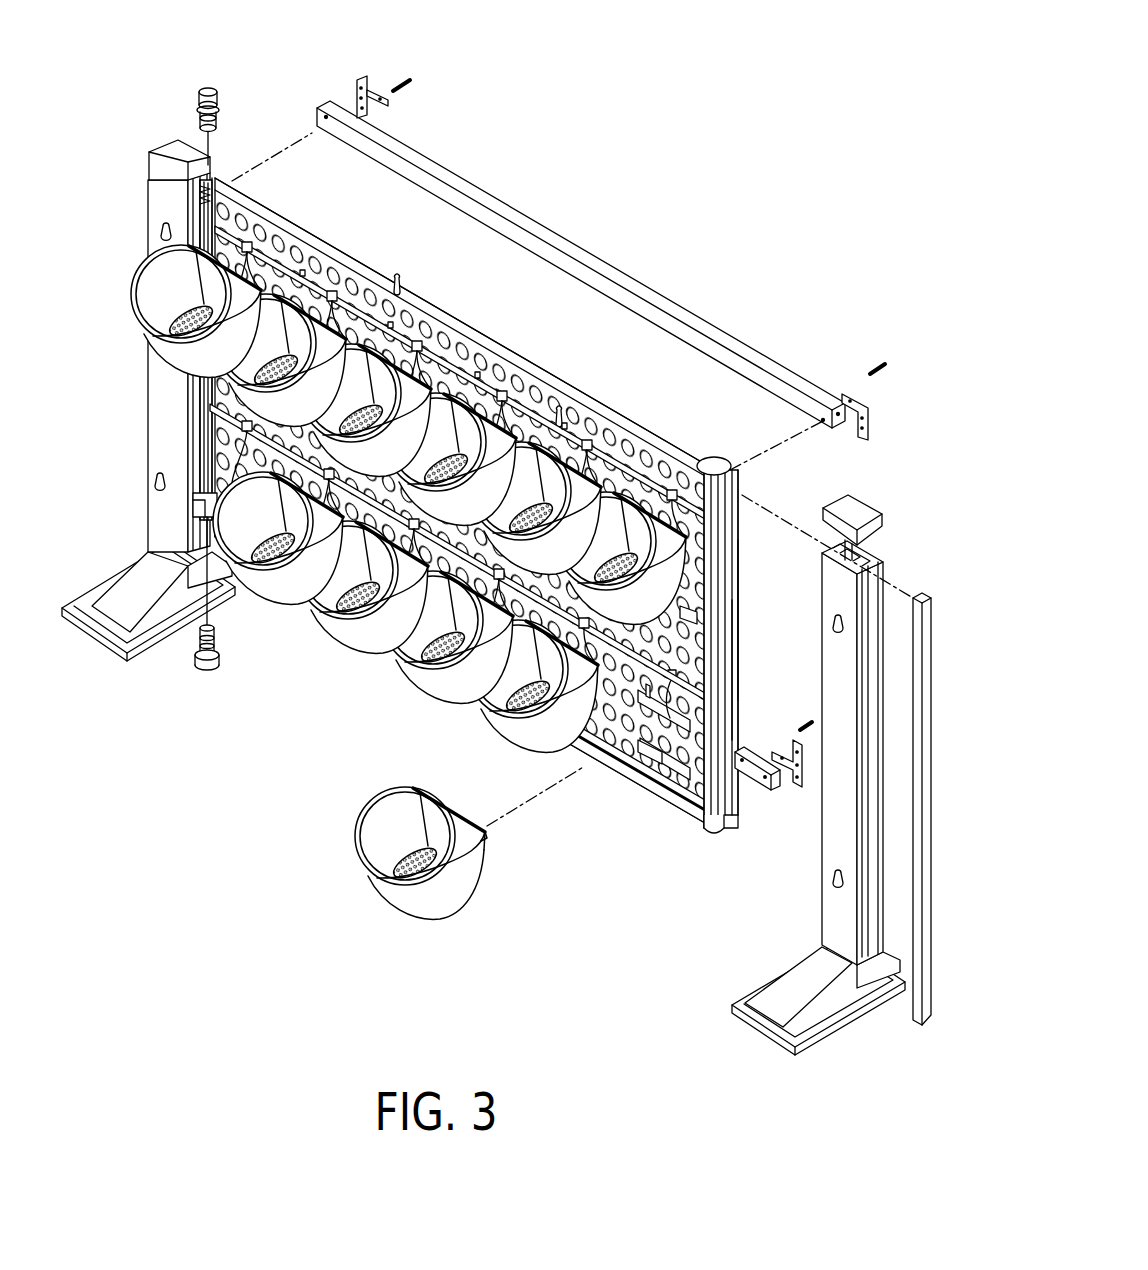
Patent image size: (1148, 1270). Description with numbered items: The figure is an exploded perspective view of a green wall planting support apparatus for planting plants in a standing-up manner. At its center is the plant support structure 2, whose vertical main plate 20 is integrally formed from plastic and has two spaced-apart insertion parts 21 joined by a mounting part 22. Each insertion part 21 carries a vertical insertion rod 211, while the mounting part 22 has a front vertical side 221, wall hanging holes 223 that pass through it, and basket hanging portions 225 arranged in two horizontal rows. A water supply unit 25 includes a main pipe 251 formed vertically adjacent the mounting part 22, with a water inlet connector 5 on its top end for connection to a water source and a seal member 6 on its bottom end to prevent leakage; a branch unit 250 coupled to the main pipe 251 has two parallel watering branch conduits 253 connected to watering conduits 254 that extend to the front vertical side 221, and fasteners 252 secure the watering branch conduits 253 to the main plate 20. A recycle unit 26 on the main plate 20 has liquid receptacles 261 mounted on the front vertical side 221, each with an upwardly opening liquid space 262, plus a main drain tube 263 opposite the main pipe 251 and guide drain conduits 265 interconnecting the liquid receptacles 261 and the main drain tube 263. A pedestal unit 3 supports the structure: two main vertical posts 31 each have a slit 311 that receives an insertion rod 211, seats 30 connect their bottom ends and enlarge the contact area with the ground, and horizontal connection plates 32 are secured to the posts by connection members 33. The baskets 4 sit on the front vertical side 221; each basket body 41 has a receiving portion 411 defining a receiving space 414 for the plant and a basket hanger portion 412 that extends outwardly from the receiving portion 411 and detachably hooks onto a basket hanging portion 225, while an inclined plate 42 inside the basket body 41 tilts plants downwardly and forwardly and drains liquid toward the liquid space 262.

The plant support structure 2 is at (254, 150).
The pedestal unit 3 is at (864, 1028).
The basket 4 is at (408, 642).
The water inlet connector 5 is at (222, 102).
The seal member 6 is at (213, 673).
The vertical main plate 20 is at (520, 358).
The insertion part 21 is at (200, 213).
The mounting part 22 is at (580, 408).
The water supply unit 25 is at (397, 432).
The recycle unit 26 is at (718, 843).
The seat 30 is at (137, 633).
The main vertical post 31 is at (167, 180).
The horizontal connection plate 32 is at (662, 322).
The connection member 33 is at (382, 72).
The basket body 41 is at (402, 921).
The inclined plate 42 is at (359, 865).
The vertical insertion rod 211 is at (733, 650).
The front vertical side 221 is at (668, 452).
The wall hanging hole 223 is at (393, 274).
The basket hanging portion 225 is at (647, 692).
The branch unit 250 is at (281, 257).
The main pipe 251 is at (205, 460).
The fastener 252 is at (443, 340).
The watering branch conduit 253 is at (428, 322).
The watering conduit 254 is at (323, 272).
The liquid receptacle 261 is at (700, 613).
The liquid space 262 is at (642, 766).
The main drain tube 263 is at (710, 833).
The guide drain conduit 265 is at (733, 668).
The slit 311 is at (833, 546).
The receiving portion 411 is at (502, 897).
The basket hanger portion 412 is at (432, 800).
The receiving space 414 is at (350, 834).